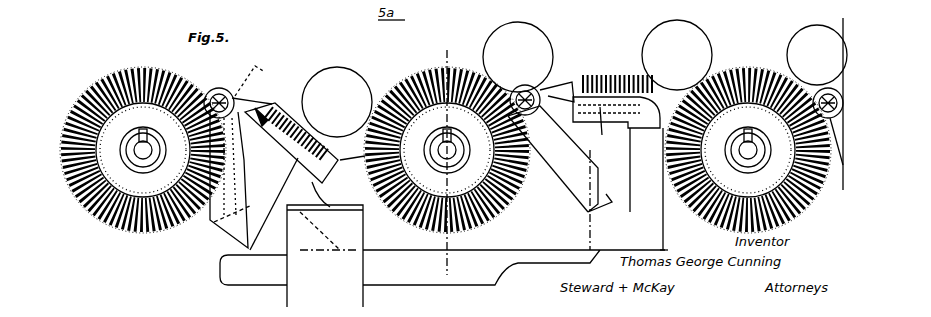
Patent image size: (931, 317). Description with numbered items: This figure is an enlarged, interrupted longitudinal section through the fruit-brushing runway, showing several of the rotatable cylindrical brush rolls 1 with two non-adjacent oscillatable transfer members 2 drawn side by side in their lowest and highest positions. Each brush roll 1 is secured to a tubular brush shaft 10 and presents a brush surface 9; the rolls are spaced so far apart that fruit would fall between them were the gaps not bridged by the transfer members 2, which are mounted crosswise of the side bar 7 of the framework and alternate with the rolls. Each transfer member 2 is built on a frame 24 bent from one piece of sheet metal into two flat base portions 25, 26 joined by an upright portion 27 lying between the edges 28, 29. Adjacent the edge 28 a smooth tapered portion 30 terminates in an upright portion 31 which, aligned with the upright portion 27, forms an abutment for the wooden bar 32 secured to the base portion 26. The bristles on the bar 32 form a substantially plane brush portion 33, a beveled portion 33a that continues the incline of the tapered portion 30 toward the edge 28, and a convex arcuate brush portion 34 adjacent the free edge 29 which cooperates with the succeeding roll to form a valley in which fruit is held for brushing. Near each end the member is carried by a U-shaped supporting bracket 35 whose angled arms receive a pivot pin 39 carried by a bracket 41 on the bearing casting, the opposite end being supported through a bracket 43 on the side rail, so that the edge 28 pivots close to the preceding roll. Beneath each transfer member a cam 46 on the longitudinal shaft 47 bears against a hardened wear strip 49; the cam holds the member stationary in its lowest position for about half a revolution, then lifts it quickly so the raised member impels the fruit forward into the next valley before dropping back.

The brush roll 1 is at (108, 226).
The transfer member 2 is at (292, 124).
The side bar 7 is at (244, 53).
The brush surface 9 is at (290, 112).
The brush shaft 10 is at (145, 140).
The frame 24 is at (402, 200).
The base portion 25 is at (222, 166).
The base portion 26 is at (290, 186).
The upright portion 27 is at (388, 166).
The edge 28 is at (219, 93).
The edge 29 is at (332, 208).
The tapered portion 30 is at (252, 98).
The upright portion 31 is at (250, 100).
The bar 32 is at (293, 196).
The plane brush portion 33 is at (620, 54).
The beveled bristle portion 33a is at (284, 105).
The arcuate brush portion 34 is at (658, 125).
The supporting bracket 35 is at (214, 220).
The pivot pin 39 is at (204, 90).
The bracket 41 is at (256, 88).
The bracket 43 is at (583, 173).
The cam 46 is at (290, 300).
The shaft 47 is at (228, 275).
The wear strip 49 is at (306, 206).